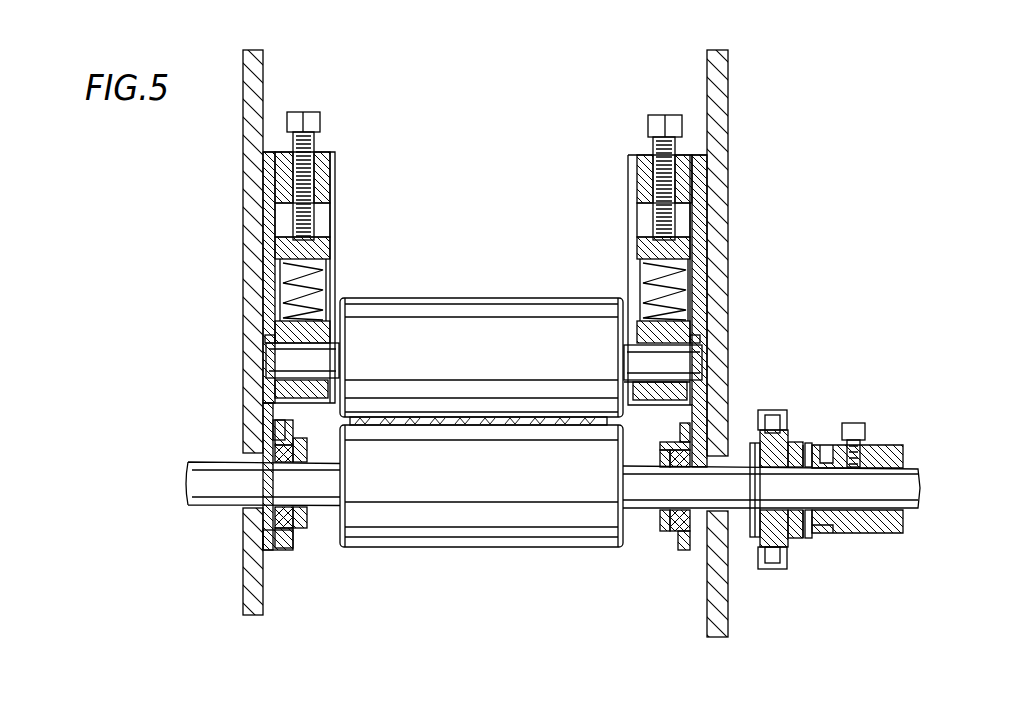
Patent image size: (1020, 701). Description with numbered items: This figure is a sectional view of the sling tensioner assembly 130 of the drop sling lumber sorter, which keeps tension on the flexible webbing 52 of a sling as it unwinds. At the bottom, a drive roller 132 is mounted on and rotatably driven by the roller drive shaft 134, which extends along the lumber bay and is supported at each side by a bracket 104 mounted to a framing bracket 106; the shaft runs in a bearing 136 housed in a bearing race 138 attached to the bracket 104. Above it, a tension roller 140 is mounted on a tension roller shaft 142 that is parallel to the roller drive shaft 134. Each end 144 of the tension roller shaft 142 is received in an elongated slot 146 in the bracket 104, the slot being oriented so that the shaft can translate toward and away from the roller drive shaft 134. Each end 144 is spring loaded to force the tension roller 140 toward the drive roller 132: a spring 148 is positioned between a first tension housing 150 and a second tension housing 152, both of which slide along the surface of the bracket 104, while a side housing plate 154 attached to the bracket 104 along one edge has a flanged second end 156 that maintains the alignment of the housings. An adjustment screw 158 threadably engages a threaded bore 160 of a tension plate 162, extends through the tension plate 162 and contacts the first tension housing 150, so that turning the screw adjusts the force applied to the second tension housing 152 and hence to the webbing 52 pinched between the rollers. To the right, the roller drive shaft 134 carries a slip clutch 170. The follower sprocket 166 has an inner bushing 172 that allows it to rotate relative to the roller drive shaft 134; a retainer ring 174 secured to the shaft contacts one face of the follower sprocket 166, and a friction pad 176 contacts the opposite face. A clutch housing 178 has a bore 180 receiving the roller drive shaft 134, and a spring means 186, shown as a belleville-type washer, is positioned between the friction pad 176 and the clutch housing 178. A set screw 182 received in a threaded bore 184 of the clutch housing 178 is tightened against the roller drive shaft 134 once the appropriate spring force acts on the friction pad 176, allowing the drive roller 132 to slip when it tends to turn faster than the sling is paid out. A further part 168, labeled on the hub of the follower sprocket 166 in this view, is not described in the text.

The flexible webbing 52 is at (594, 430).
The bracket 104 is at (263, 233).
The framing bracket 106 is at (250, 180).
The sling tensioner assembly 130 is at (196, 272).
The drive roller 132 is at (495, 548).
The roller drive shaft 134 is at (640, 515).
The bearing 136 is at (300, 532).
The bearing race 138 is at (286, 552).
The tension roller 140 is at (498, 364).
The tension roller shaft 142 is at (692, 358).
The end 144 is at (282, 362).
The elongated slot 146 is at (268, 338).
The spring 148 is at (315, 292).
The first tension housing 150 is at (320, 252).
The second tension housing 152 is at (343, 331).
The side housing plate 154 is at (322, 213).
The flanged second end 156 is at (333, 232).
The adjustment screw 158 is at (312, 110).
The threaded bore 160 is at (302, 190).
The tension plate 162 is at (330, 155).
The follower sprocket 166 is at (798, 540).
The hub flange 168 is at (785, 572).
The slip clutch 170 is at (827, 486).
The inner bushing 172 is at (786, 440).
The retainer ring 174 is at (754, 540).
The friction pad 176 is at (800, 445).
The clutch housing 178 is at (892, 534).
The bore 180 is at (868, 534).
The set screw 182 is at (857, 424).
The threaded bore 184 is at (858, 462).
The spring means 186 is at (815, 536).